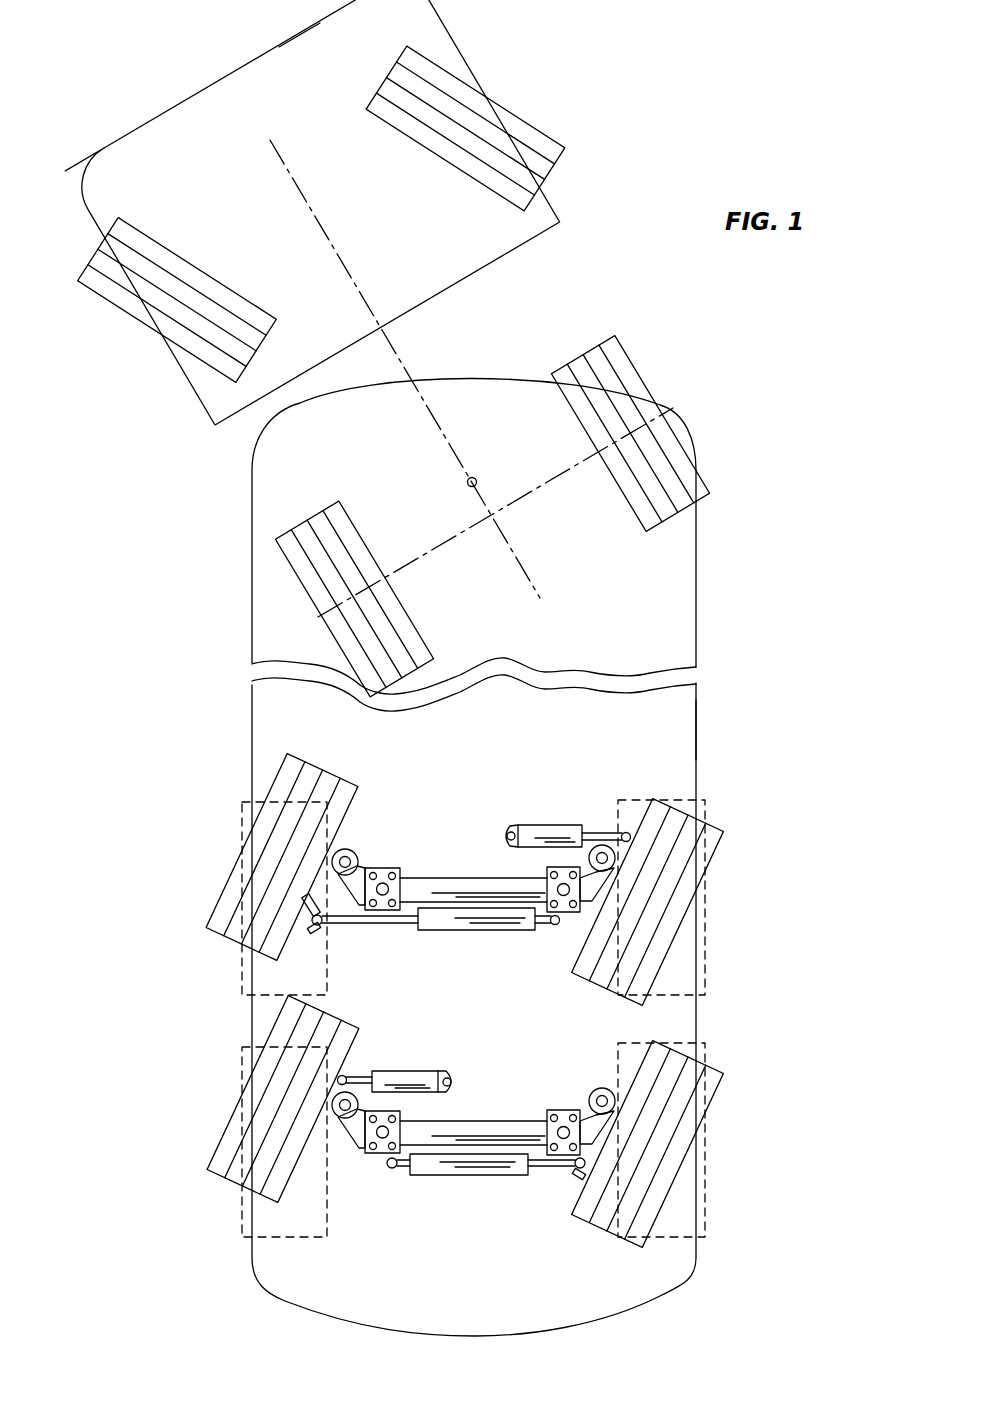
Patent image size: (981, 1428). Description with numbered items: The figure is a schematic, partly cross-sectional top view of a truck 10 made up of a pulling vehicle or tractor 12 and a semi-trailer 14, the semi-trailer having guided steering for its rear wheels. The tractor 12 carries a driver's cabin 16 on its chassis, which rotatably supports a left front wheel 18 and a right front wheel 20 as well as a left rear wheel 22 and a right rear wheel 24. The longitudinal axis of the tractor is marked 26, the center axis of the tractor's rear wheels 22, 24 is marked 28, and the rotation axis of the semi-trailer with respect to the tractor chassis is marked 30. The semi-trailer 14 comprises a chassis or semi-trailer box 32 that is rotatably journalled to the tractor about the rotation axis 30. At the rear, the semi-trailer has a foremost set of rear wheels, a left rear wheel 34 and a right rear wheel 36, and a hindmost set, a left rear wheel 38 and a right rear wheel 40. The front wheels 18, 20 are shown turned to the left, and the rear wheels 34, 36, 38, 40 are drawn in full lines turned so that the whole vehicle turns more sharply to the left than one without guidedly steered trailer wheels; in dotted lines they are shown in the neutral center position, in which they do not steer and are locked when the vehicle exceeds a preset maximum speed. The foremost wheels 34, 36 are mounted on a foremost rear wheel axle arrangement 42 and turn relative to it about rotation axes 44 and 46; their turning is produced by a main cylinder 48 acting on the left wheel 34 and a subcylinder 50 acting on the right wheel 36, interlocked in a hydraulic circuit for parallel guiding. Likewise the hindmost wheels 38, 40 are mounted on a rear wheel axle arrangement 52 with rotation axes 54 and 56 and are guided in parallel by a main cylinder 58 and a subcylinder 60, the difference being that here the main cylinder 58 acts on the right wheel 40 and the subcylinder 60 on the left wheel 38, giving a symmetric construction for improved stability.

The truck 10 is at (541, 314).
The tractor 12 is at (174, 126).
The semi-trailer 14 is at (703, 606).
The driver's cabin 16 is at (279, 58).
The left front wheel 18 is at (127, 305).
The right front wheel 20 is at (452, 88).
The left rear wheel 22 is at (312, 599).
The right rear wheel 24 is at (635, 383).
The longitudinal axis 26 is at (397, 360).
The center axis 28 is at (545, 488).
The rotation axis 30 is at (475, 478).
The semi-trailer box 32 is at (685, 742).
The left rear wheel 34 is at (229, 895).
The right rear wheel 36 is at (712, 838).
The left rear wheel 38 is at (231, 1135).
The right rear wheel 40 is at (712, 1078).
The foremost rear wheel axle arrangement 42 is at (473, 872).
The rotation axis 44 is at (347, 848).
The rotation axis 46 is at (598, 844).
The main cylinder 48 is at (480, 931).
The subcylinder 50 is at (546, 826).
The rear wheel axle arrangement 52 is at (491, 1116).
The rotation axis 54 is at (336, 1121).
The rotation axis 56 is at (601, 1088).
The main cylinder 58 is at (476, 1177).
The subcylinder 60 is at (410, 1071).